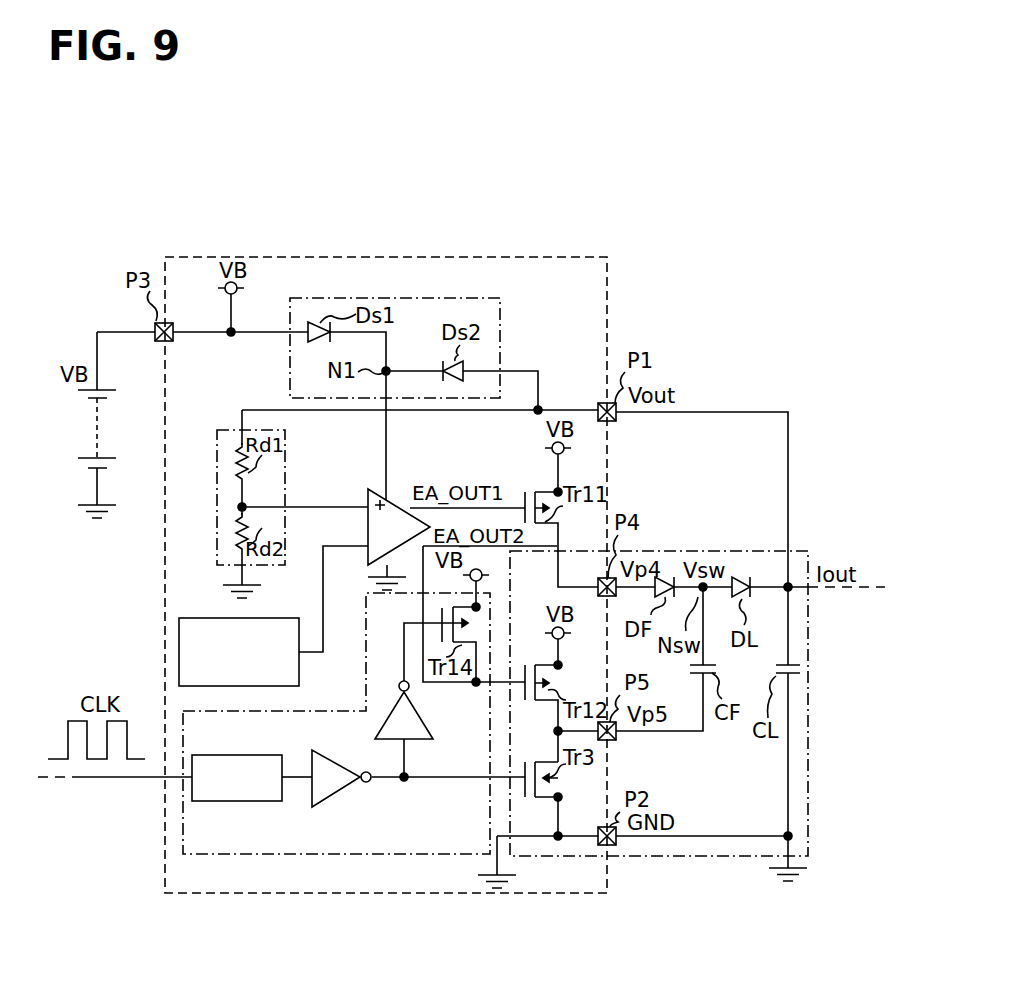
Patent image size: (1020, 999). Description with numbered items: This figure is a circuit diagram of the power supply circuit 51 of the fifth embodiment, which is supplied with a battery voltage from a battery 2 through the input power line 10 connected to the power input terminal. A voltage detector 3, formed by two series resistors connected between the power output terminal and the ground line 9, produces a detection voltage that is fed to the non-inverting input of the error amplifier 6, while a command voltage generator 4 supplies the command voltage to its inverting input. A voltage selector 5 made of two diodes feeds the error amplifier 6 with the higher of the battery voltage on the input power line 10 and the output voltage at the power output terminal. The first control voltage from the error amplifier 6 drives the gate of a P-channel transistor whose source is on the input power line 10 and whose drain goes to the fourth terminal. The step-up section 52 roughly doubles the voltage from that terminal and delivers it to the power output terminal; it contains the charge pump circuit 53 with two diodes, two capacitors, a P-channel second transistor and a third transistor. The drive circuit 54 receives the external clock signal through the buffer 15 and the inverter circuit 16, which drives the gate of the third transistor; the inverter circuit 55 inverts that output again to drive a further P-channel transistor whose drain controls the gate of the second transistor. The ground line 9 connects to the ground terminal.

The power supply circuit 51 is at (459, 218).
The voltage selector 5 is at (440, 299).
The input power line 10 is at (238, 291).
The battery 2 is at (90, 438).
The voltage detector 3 is at (220, 428).
The ground line 9 is at (246, 570).
The error amplifier 6 is at (394, 497).
The command voltage generator 4 is at (193, 618).
The drive circuit 54 is at (330, 711).
The buffer 15 is at (250, 801).
The inverter circuit 16 is at (340, 795).
The inverter circuit 55 is at (430, 726).
The charge pump circuit 53 is at (727, 551).
The step-up section 52 is at (518, 906).